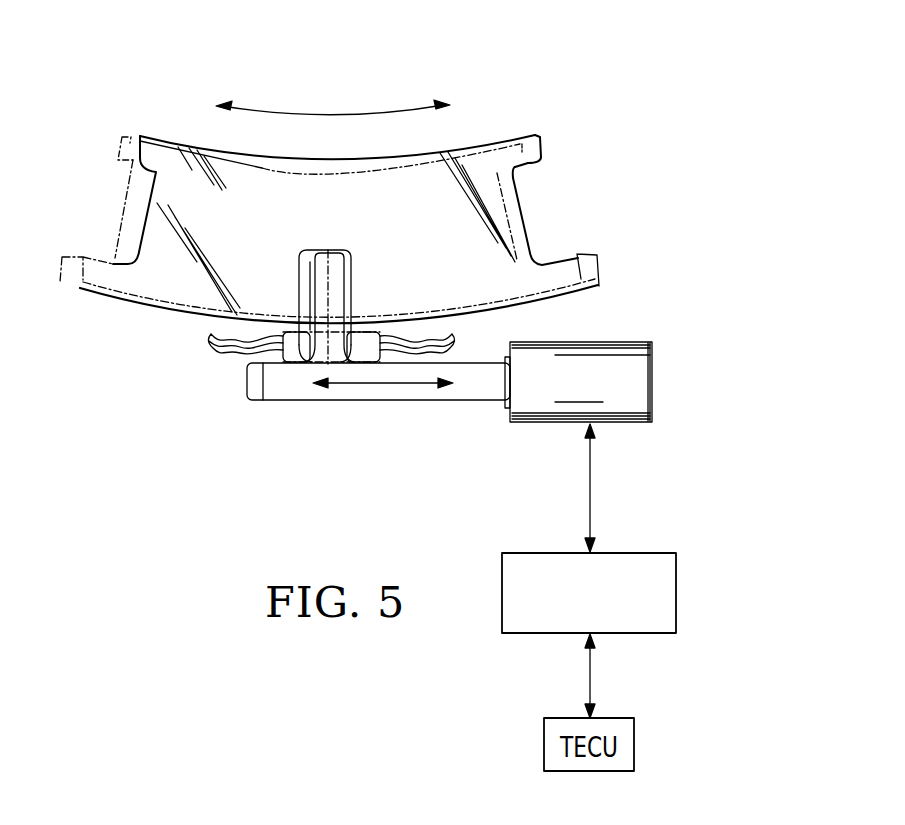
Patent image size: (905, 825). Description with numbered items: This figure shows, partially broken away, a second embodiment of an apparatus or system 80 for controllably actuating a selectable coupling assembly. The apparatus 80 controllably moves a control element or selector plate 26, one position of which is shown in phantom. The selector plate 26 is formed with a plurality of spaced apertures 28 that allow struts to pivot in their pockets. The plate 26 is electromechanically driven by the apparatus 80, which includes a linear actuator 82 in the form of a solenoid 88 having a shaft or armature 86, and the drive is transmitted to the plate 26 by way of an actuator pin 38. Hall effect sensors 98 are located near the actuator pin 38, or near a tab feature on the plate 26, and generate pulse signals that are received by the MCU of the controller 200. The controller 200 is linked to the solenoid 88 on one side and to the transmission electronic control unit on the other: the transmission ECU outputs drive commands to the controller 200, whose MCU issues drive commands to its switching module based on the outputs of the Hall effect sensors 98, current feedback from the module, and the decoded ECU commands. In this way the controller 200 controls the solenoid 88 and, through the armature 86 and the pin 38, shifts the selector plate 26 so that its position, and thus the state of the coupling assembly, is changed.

The apparatus or system 80 is at (540, 100).
The spaced apertures 28 is at (139, 225).
The control element or plate 26 is at (610, 262).
The actuator pin 38 is at (360, 281).
The Hall effect sensor 98 is at (289, 326).
The shaft or armature 86 is at (380, 401).
The linear actuator 82 is at (605, 389).
The solenoid 88 is at (617, 424).
The controller 200 is at (676, 594).